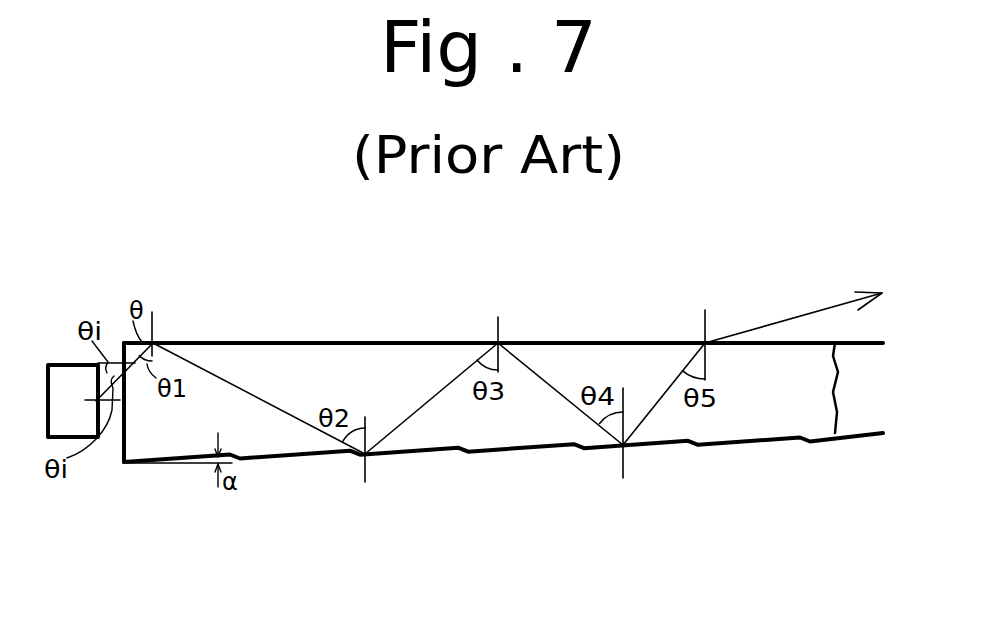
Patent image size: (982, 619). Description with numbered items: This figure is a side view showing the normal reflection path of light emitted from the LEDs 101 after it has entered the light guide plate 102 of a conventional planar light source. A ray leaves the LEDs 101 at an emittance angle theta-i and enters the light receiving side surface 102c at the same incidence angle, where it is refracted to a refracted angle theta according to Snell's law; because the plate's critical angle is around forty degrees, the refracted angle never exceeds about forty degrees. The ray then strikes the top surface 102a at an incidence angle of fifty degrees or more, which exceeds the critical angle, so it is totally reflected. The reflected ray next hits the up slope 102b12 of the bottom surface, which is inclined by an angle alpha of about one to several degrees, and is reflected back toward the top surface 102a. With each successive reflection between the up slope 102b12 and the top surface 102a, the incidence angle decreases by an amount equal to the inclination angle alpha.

The LEDs 101 is at (47, 363).
The light guide plate 102 is at (489, 403).
The top surface 102a is at (252, 342).
The up slope 102b12 is at (398, 452).
The light receiving side surface 102c is at (122, 443).